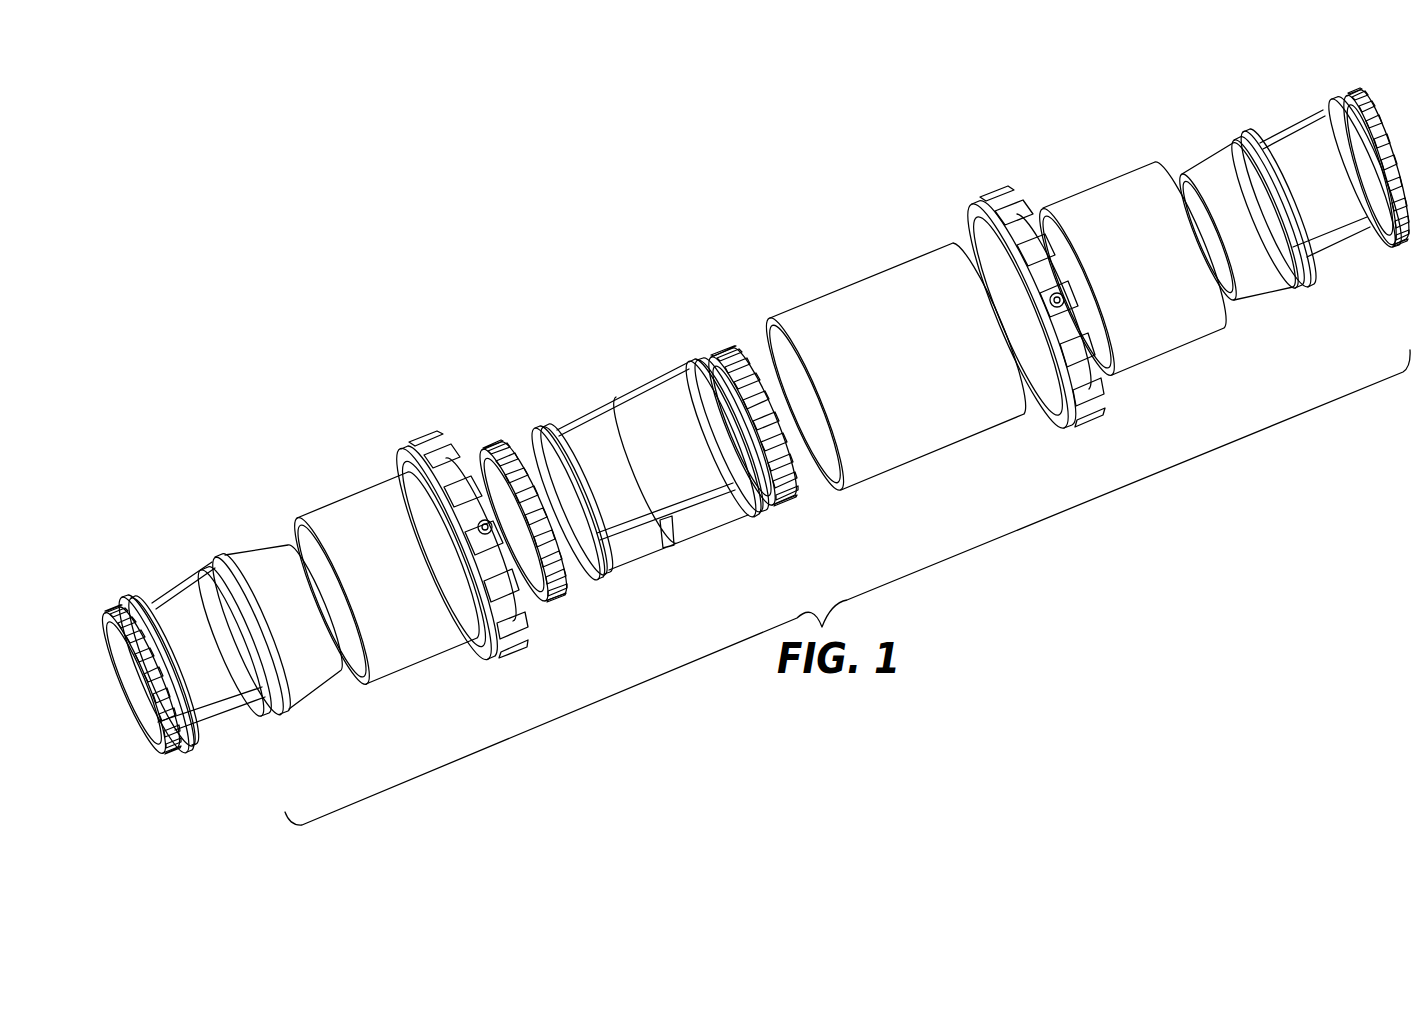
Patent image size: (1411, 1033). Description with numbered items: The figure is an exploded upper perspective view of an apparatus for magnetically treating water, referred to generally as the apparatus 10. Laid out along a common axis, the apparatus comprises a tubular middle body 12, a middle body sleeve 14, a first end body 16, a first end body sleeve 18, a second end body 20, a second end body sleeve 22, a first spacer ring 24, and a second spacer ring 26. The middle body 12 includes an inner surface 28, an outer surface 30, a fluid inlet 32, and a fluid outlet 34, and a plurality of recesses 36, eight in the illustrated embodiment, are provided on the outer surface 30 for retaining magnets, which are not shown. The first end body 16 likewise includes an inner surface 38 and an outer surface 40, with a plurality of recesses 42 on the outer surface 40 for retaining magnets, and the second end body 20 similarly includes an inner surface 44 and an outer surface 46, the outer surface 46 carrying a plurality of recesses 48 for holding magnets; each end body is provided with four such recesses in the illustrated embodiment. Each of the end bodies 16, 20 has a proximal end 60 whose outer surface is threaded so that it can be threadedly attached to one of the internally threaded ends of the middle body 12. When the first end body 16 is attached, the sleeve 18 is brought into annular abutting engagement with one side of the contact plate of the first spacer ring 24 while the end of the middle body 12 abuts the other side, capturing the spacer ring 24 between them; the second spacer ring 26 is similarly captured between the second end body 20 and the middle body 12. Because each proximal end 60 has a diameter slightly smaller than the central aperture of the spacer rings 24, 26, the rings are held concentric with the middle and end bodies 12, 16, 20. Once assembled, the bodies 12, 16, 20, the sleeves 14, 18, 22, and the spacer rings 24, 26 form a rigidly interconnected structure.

The apparatus for magnetically treating water 10 is at (751, 438).
The tubular middle body 12 is at (634, 462).
The middle body sleeve 14 is at (907, 262).
The first end body 16 is at (217, 651).
The first end body sleeve 18 is at (372, 488).
The second end body 20 is at (1290, 206).
The second end body sleeve 22 is at (1124, 178).
The first spacer ring 24 is at (487, 549).
The second spacer ring 26 is at (997, 184).
The inner surface 28 is at (532, 565).
The outer surface 30 is at (690, 342).
The fluid inlet 32 is at (463, 446).
The fluid outlet 34 is at (756, 342).
The recesses 36 is at (638, 407).
The inner surface 38 is at (143, 708).
The outer surface 40 is at (216, 541).
The recesses 42 is at (196, 600).
The inner surface 44 is at (1220, 284).
The outer surface 46 is at (1240, 121).
The recesses 48 is at (1311, 139).
The proximal end 60 is at (262, 530).